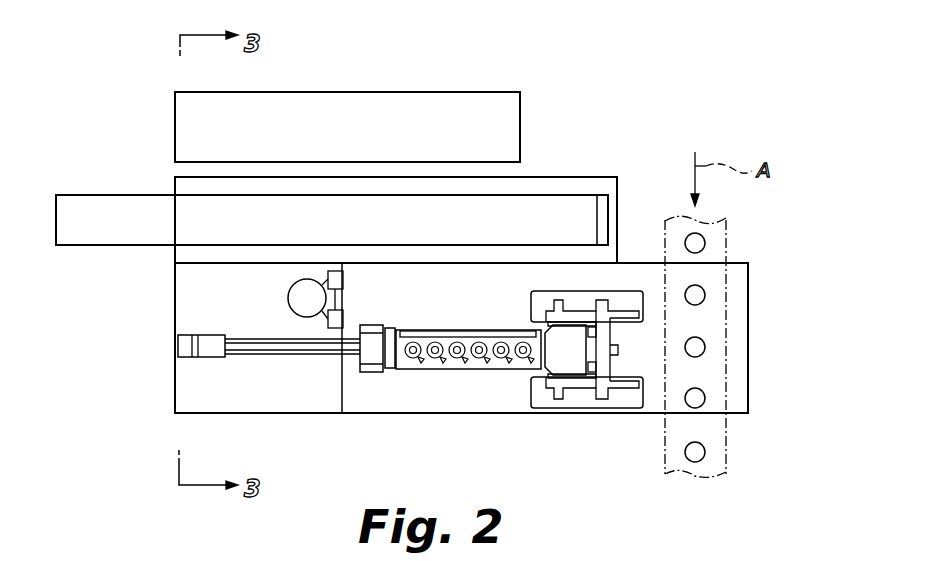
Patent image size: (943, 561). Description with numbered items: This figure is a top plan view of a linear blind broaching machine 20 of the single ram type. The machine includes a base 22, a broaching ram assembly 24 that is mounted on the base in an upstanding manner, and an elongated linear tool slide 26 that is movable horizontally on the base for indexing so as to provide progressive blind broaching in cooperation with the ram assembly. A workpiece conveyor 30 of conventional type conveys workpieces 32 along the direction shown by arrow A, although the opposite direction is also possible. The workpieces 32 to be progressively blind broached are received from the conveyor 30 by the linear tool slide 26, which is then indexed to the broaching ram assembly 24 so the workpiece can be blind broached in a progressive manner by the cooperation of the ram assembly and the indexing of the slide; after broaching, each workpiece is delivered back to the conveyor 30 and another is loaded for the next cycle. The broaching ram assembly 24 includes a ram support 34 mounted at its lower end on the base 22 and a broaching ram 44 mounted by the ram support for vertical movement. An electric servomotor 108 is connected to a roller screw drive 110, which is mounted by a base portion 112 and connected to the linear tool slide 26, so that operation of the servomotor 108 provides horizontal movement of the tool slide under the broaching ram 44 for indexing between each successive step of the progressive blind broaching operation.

The linear blind broaching machine 20 is at (756, 260).
The base 22 is at (450, 406).
The broaching ram assembly 24 is at (594, 303).
The linear tool slide 26 is at (453, 312).
The workpiece conveyor 30 is at (706, 245).
The workpieces 32 is at (705, 246).
The ram support 34 is at (583, 400).
The broaching ram 44 is at (572, 338).
The electric servomotor 108 is at (205, 352).
The roller screw drive 110 is at (235, 355).
The base portion 112 is at (389, 328).